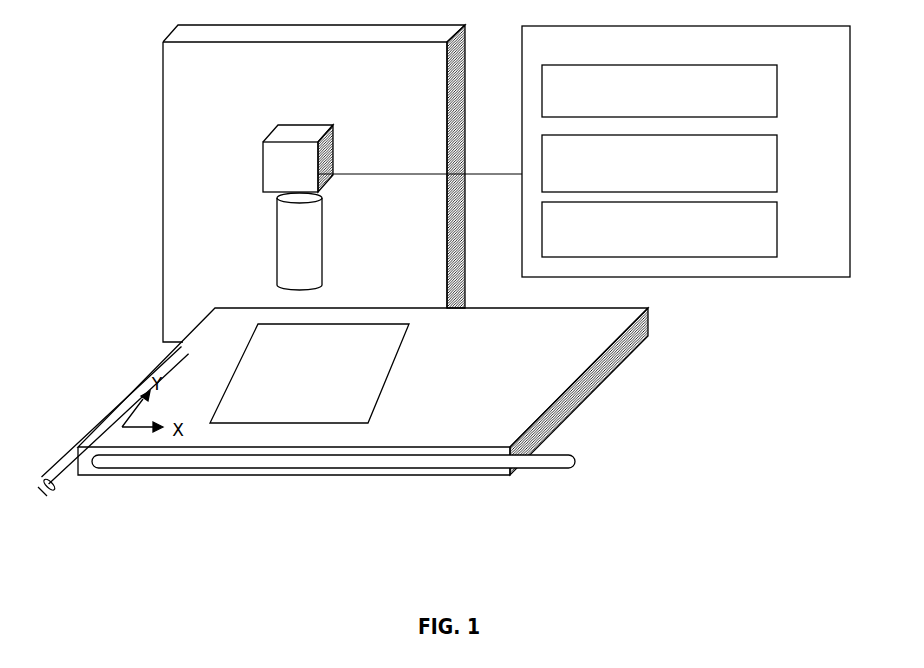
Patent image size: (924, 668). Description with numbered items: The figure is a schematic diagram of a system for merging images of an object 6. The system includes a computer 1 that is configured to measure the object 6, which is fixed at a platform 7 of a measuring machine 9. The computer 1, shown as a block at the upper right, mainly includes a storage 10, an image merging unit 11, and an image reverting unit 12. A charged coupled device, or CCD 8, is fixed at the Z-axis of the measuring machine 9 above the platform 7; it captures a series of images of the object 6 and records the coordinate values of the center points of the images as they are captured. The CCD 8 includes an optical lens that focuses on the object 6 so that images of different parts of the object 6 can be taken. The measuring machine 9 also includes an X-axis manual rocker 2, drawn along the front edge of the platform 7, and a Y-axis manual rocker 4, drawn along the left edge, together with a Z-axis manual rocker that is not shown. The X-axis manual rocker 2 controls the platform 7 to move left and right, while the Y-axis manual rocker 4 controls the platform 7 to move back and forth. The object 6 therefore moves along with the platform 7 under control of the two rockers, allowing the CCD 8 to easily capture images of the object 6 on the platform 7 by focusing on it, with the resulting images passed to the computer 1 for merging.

The computer 1 is at (850, 125).
The X-axis manual rocker 2 is at (578, 458).
The Y-axis manual rocker 4 is at (62, 482).
The object 6 is at (402, 340).
The platform 7 is at (622, 340).
The charged coupled device (CCD) 8 is at (263, 142).
The measuring machine 9 is at (163, 92).
The storage 10 is at (777, 92).
The image merging unit 11 is at (777, 162).
The image reverting unit 12 is at (777, 228).